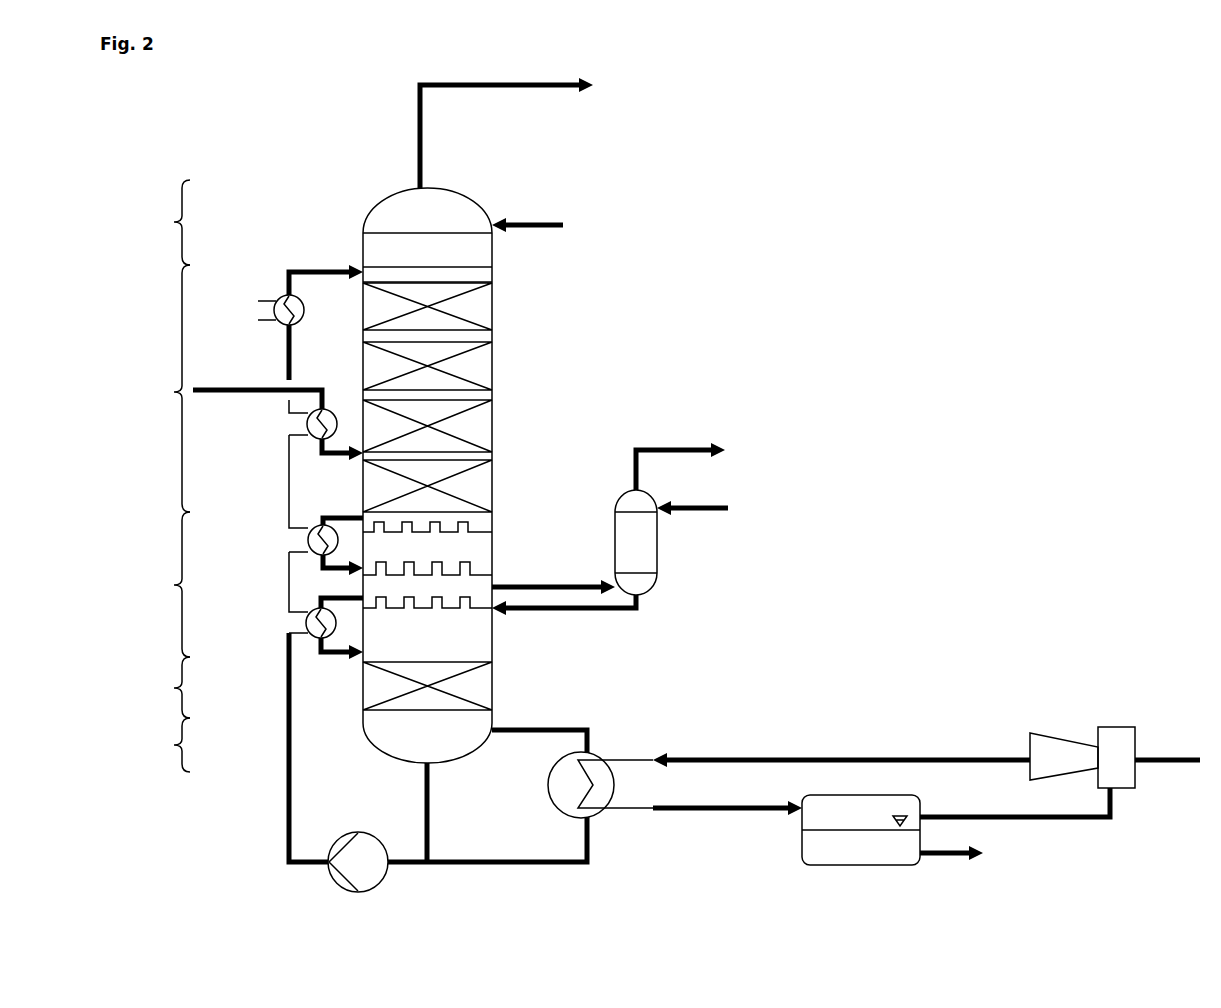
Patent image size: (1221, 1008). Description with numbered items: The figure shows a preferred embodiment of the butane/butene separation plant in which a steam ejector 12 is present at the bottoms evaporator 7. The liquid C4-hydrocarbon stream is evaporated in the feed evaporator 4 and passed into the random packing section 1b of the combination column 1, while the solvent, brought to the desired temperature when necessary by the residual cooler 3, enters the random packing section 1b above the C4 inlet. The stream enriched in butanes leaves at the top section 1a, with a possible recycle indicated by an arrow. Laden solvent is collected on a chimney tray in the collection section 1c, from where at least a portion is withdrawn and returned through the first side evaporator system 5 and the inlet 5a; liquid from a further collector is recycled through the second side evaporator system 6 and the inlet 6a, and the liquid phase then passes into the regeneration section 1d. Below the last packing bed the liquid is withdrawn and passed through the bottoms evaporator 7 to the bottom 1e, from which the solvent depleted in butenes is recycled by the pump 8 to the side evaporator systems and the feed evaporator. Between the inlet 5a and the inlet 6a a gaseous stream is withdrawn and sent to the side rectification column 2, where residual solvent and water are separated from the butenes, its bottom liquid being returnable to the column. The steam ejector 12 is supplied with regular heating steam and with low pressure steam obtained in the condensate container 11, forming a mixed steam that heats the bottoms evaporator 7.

The combination column 1 is at (478, 420).
The top section 1a is at (161, 222).
The random packing section 1b is at (161, 388).
The collection section 1c is at (162, 584).
The regeneration section 1d is at (161, 687).
The bottom 1e is at (161, 745).
The side rectification column 2 is at (610, 529).
The residual cooler 3 is at (309, 322).
The feed evaporator 4 is at (278, 425).
The first side evaporator system 5 is at (326, 523).
The inlet 5a is at (353, 573).
The second side evaporator system 6 is at (311, 628).
The inlet 6a is at (358, 655).
The bottoms evaporator 7 is at (789, 773).
The pump 8 is at (438, 762).
The condensate container 11 is at (932, 828).
The steam ejector 12 is at (1115, 733).